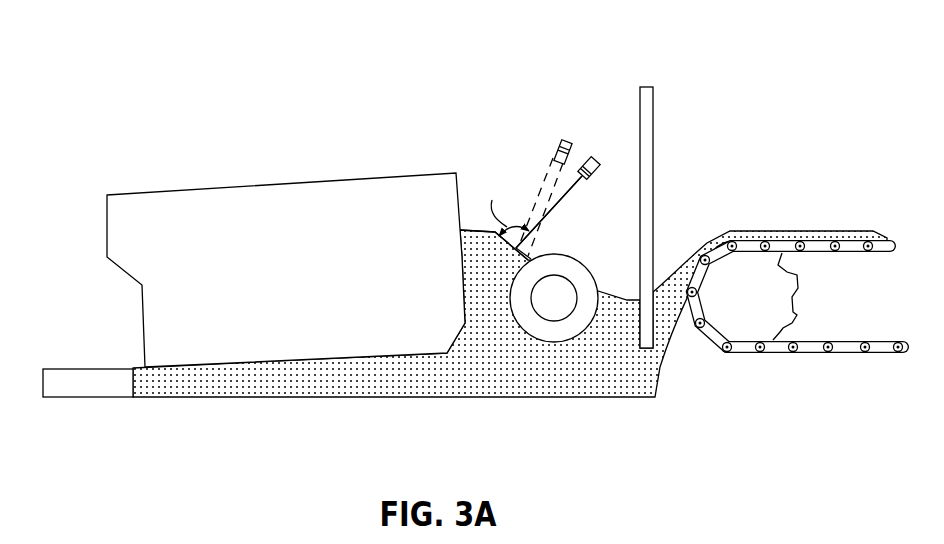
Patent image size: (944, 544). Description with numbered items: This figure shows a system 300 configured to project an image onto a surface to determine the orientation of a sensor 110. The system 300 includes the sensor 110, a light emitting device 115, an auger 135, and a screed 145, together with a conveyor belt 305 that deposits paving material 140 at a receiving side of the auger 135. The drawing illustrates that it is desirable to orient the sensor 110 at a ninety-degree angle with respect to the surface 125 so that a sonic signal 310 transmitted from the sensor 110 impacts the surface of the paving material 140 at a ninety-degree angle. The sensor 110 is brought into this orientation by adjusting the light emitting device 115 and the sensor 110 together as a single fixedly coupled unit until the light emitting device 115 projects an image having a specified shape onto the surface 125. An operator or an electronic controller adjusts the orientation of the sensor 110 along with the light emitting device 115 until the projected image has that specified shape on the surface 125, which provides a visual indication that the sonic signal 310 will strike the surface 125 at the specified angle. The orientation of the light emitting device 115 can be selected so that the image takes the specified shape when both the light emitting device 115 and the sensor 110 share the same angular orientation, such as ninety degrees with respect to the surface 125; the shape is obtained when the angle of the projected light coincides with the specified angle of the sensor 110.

The system 300 is at (473, 233).
The sensor 110 is at (594, 157).
The light emitting device 115 is at (558, 143).
The surface 125 is at (505, 255).
The auger 135 is at (547, 343).
The paving material 140 is at (607, 356).
The screed 145 is at (327, 180).
The conveyor belt 305 is at (787, 355).
The sonic signal 310 is at (560, 209).